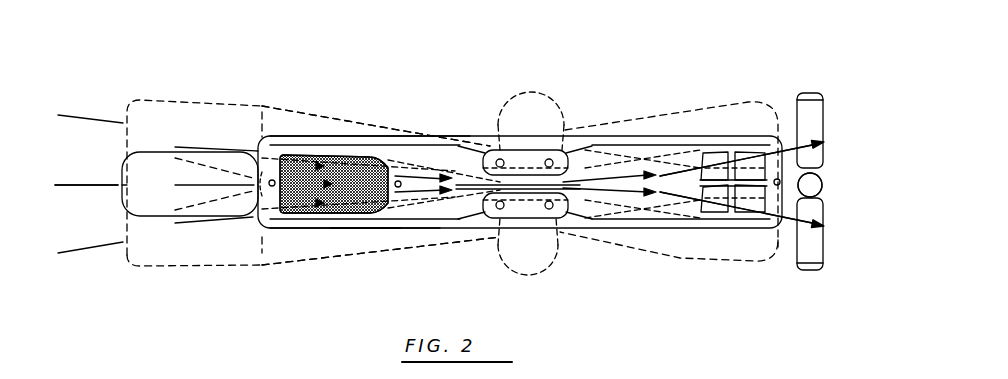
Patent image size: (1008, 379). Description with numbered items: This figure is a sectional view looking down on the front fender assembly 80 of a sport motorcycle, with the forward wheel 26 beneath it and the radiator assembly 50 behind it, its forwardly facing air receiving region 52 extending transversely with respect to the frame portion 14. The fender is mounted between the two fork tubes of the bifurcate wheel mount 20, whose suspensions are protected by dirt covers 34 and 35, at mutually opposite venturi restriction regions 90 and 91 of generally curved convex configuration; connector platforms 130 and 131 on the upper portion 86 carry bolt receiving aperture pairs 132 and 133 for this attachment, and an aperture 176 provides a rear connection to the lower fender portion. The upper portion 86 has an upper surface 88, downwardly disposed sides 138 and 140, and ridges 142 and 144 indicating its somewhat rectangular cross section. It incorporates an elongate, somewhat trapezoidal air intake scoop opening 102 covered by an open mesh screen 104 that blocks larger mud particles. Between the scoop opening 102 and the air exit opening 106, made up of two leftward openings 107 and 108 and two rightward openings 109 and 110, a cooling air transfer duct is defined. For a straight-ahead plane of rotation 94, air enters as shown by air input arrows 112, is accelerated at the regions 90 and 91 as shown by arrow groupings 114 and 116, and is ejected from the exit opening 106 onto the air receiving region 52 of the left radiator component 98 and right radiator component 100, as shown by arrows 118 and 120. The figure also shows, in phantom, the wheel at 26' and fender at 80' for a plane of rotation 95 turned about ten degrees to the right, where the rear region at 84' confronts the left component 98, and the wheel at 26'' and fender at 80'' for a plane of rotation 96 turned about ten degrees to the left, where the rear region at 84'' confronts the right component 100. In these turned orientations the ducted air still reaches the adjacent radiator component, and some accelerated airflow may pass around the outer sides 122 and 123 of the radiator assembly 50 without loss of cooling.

The bifurcate wheel mount 20 is at (585, 42).
The forward wheel 26 is at (165, 189).
The forward wheel in phantom (turned right) 26' is at (194, 162).
The forward wheel in phantom (turned left) 26'' is at (194, 270).
The plane of rotation 94 is at (72, 185).
The plane of rotation 95 is at (85, 117).
The plane of rotation 96 is at (72, 250).
The air input arrows 112 is at (193, 151).
The front fender assembly 80 is at (381, 148).
The front fender assembly in phantom (turned right) 80' is at (365, 96).
The front fender assembly in phantom (turned left) 80'' is at (381, 282).
The upper portion 86 is at (303, 232).
The air intake scoop opening 102 is at (292, 155).
The open mesh screen 104 is at (330, 158).
The upper surface 88 is at (405, 153).
The side 140 is at (355, 140).
The ridge 144 is at (433, 143).
The ridge 142 is at (367, 222).
The side 138 is at (400, 227).
The arrow grouping 114 is at (470, 176).
The arrow grouping 116 is at (585, 174).
The dirt cover 35 is at (530, 85).
The dirt cover 34 is at (540, 278).
The connector platform 131 is at (528, 157).
The connector platform 130 is at (525, 208).
The bolt receiving aperture pair 133 is at (503, 157).
The bolt receiving aperture pair 132 is at (500, 208).
The venturi restriction region 91 is at (562, 150).
The venturi restriction region 90 is at (490, 220).
The rear region in phantom (turned right) 84' is at (669, 246).
The rear region in phantom (turned left) 84'' is at (671, 118).
The leftward opening 107 is at (715, 213).
The leftward opening 108 is at (752, 214).
The rightward opening 109 is at (718, 152).
The rightward opening 110 is at (757, 148).
The air exit opening 106 is at (740, 150).
The arrow 120 is at (805, 152).
The arrow 118 is at (808, 213).
The right radiator assembly component 100 is at (818, 105).
The outer side 123 is at (813, 93).
The frame portion 14 is at (823, 190).
The aperture 176 is at (825, 173).
The left radiator assembly component 98 is at (818, 263).
The outer side 122 is at (813, 272).
The radiator assembly 50 is at (880, 243).
The air receiving region 52 is at (792, 259).